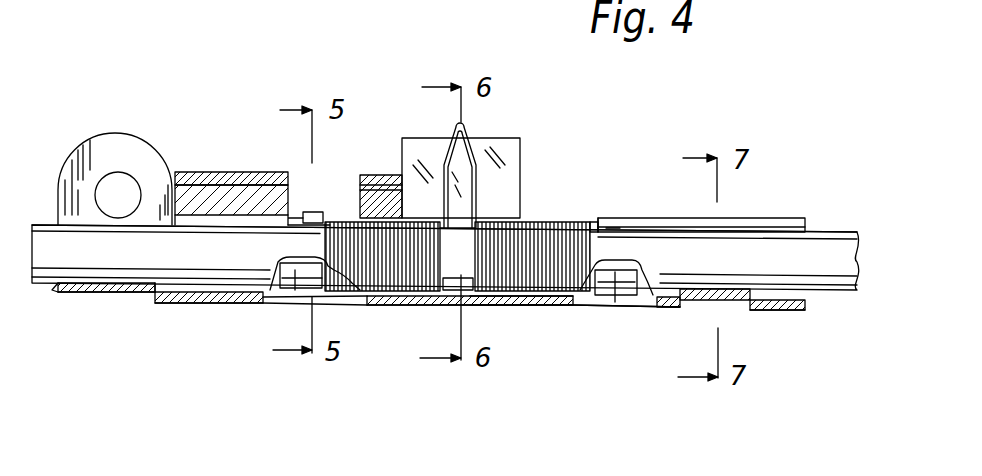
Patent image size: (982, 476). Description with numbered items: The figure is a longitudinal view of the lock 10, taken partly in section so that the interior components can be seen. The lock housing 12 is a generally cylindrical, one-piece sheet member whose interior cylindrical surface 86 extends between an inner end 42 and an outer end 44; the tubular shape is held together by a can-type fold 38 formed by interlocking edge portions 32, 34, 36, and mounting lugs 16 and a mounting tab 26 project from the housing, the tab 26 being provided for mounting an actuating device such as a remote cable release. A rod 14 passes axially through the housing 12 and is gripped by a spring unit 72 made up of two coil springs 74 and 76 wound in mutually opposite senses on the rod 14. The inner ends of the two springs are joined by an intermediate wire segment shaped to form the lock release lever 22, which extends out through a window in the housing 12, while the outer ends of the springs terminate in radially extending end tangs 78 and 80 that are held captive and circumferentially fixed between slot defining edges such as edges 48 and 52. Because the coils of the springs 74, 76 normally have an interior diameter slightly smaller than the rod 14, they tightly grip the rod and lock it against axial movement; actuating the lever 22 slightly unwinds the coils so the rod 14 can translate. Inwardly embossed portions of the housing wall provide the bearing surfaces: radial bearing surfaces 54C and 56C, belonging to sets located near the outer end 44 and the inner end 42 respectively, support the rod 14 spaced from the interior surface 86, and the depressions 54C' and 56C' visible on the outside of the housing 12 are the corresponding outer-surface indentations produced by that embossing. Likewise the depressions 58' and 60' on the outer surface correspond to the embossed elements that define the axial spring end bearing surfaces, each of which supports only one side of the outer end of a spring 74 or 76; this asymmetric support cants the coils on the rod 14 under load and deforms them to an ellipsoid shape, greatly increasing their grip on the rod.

The lock 10 is at (364, 77).
The housing 12 is at (520, 318).
The rod 14 is at (663, 240).
The mounting lugs 16 is at (98, 142).
The lock release lever 22 is at (448, 142).
The mounting tab 26 is at (522, 138).
The edge portion 32 is at (368, 177).
The edge portion 34 is at (254, 200).
The edge portion 36 is at (379, 208).
The can-type fold 38 is at (202, 172).
The inner end 42 is at (807, 309).
The outer end 44 is at (53, 291).
The slot defining edge 48 is at (322, 218).
The slot defining edge 52 is at (768, 220).
The radial bearing surface 54C is at (111, 268).
The depression 54C' is at (187, 336).
The radial bearing surface 56C is at (735, 274).
The depression 56C' is at (653, 349).
The depression 58' is at (281, 313).
The depression 60' is at (617, 302).
The spring unit 72 is at (502, 208).
The coil spring 74 is at (395, 307).
The coil spring 76 is at (537, 308).
The end tang 78 is at (312, 225).
The end tang 80 is at (593, 222).
The interior cylindrical surface 86 is at (614, 231).